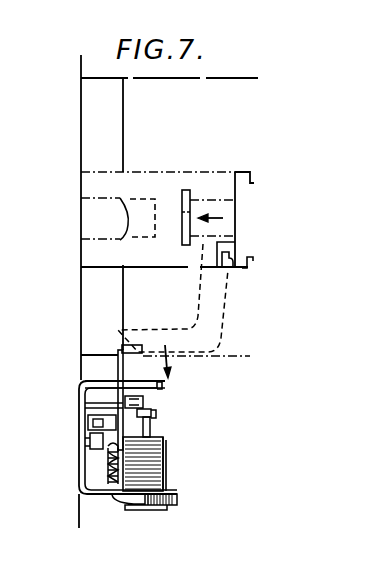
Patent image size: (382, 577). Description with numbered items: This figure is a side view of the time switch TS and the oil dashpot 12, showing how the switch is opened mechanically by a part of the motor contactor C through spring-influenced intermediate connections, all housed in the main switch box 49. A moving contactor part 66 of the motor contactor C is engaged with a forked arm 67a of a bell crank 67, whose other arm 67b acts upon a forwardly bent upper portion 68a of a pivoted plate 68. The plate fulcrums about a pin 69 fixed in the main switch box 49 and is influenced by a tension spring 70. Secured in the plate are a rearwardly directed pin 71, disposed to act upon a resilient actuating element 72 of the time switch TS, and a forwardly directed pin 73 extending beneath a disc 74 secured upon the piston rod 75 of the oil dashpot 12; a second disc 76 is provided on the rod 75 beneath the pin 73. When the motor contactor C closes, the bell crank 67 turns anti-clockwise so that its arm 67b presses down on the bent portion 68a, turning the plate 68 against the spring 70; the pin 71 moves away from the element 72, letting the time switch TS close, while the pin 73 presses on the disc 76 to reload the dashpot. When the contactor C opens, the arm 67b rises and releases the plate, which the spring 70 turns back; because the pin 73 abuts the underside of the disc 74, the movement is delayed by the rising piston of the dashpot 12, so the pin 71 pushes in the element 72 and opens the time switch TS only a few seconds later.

The oil dashpot 12 is at (167, 473).
The main switch box 49 is at (79, 477).
The moving contactor part 66 is at (215, 246).
The bell crank 67 is at (213, 335).
The forked arm 67a is at (206, 296).
The other arm 67b is at (125, 330).
The pivoted plate 68 is at (118, 370).
The forwardly bent upper portion 68a is at (122, 349).
The pin 69 is at (146, 418).
The tension spring 70 is at (110, 470).
The rearwardly directed pin 71 is at (90, 420).
The resilient actuating element 72 is at (90, 438).
The forwardly directed pin 73 is at (135, 402).
The disc 74 is at (163, 385).
The piston rod 75 is at (151, 424).
The second disc 76 is at (156, 414).
The motor contactor C is at (168, 203).
The time switch TS is at (93, 424).